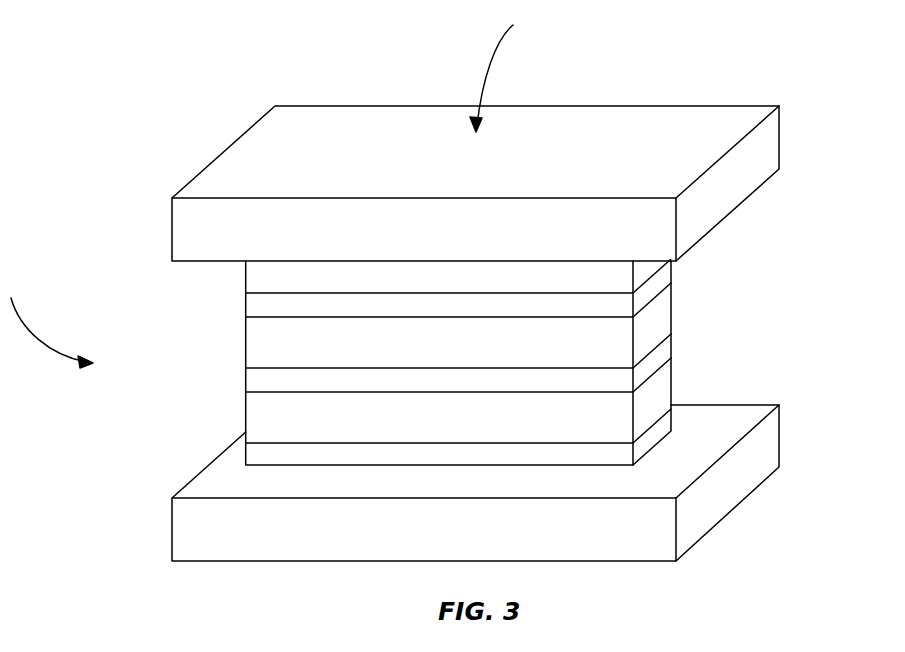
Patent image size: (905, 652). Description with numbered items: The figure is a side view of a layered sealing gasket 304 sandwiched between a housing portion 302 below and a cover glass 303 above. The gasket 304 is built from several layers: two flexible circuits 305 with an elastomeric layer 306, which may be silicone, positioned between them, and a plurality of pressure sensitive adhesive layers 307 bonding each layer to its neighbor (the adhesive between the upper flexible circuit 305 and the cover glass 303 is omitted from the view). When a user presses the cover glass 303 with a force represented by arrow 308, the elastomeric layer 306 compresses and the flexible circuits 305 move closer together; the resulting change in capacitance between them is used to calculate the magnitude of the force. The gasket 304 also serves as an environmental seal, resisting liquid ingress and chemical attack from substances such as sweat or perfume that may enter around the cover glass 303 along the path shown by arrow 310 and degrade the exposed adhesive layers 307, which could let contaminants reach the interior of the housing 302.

The housing portion 302 is at (172, 531).
The cover glass 303 is at (172, 226).
The gasket 304 is at (164, 262).
The flexible circuits 305 is at (640, 270).
The elastomeric layer 306 is at (640, 338).
The pressure sensitive adhesive layers 307 is at (640, 298).
The arrow representing user force 308 is at (487, 50).
The arrow indicating substance ingress 310 is at (47, 346).